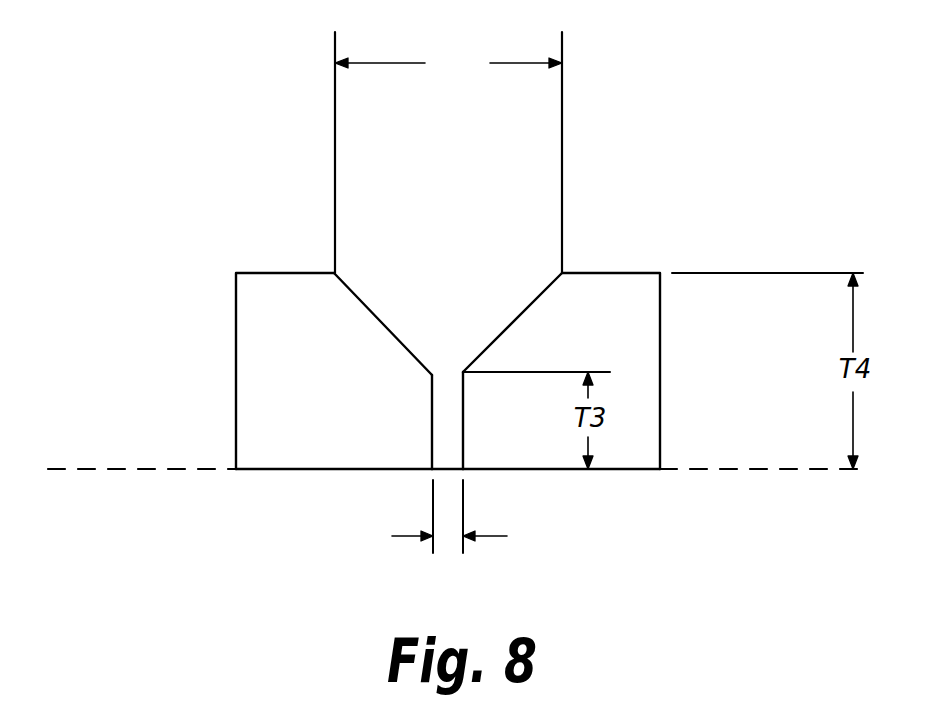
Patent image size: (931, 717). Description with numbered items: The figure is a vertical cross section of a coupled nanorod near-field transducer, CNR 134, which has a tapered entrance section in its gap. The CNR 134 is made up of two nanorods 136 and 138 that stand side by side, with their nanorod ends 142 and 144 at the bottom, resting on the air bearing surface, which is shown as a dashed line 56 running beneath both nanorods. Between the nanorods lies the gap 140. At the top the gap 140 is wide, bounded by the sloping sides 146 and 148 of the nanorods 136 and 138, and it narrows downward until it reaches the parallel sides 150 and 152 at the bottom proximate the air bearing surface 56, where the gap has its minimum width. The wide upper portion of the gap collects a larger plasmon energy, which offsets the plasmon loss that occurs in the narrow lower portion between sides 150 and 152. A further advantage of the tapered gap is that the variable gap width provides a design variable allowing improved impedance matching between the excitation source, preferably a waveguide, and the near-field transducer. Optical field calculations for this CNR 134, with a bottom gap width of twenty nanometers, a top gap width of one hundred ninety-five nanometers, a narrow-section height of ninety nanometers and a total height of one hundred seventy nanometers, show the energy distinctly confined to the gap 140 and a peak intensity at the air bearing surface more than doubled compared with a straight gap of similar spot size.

The surface 56 is at (157, 473).
The CNR 134 is at (647, 156).
The nanorod 136 is at (267, 332).
The nanorod 138 is at (633, 323).
The gap 140 is at (447, 305).
The nanorod end 142 is at (322, 473).
The nanorod end 144 is at (562, 470).
The side 146 is at (352, 289).
The side 148 is at (540, 290).
The side 150 is at (432, 420).
The side 152 is at (463, 420).